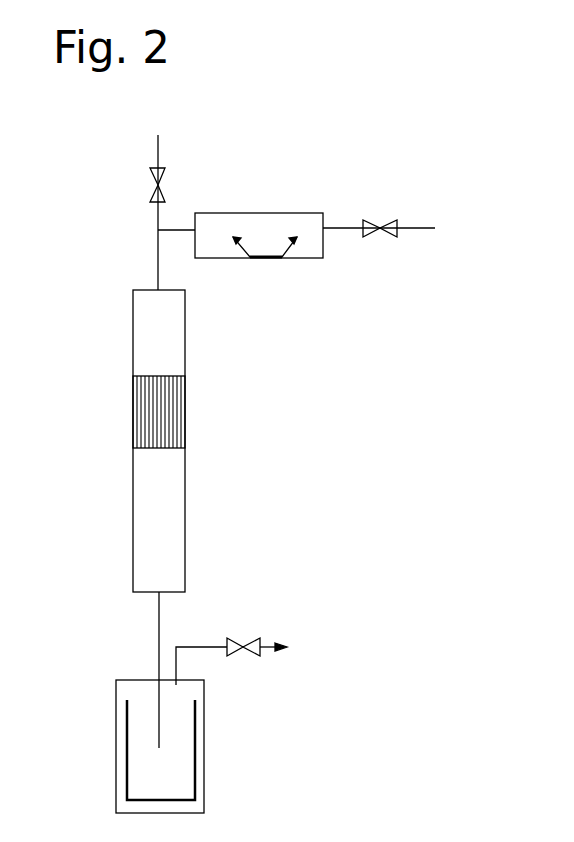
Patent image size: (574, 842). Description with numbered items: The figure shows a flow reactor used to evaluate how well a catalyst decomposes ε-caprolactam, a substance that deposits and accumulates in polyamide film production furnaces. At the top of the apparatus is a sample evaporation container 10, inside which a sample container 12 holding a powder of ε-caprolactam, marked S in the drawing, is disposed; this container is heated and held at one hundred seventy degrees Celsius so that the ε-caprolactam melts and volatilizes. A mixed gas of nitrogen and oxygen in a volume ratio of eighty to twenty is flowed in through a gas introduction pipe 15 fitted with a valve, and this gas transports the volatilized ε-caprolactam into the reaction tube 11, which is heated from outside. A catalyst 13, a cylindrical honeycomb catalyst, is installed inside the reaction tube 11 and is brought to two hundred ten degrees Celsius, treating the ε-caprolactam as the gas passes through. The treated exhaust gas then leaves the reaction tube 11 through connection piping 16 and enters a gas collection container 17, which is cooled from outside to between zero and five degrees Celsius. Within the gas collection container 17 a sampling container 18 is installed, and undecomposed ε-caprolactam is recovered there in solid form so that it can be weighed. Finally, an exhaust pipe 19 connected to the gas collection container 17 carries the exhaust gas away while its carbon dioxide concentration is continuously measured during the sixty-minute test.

The sample evaporation container 10 is at (237, 213).
The reaction tube 11 is at (185, 343).
The sample container 12 is at (283, 257).
The catalyst 13 is at (167, 423).
The gas introduction pipe 15 is at (353, 226).
The connection piping 16 is at (155, 642).
The gas collection container 17 is at (204, 723).
The sampling container 18 is at (195, 785).
The exhaust pipe 19 is at (203, 647).